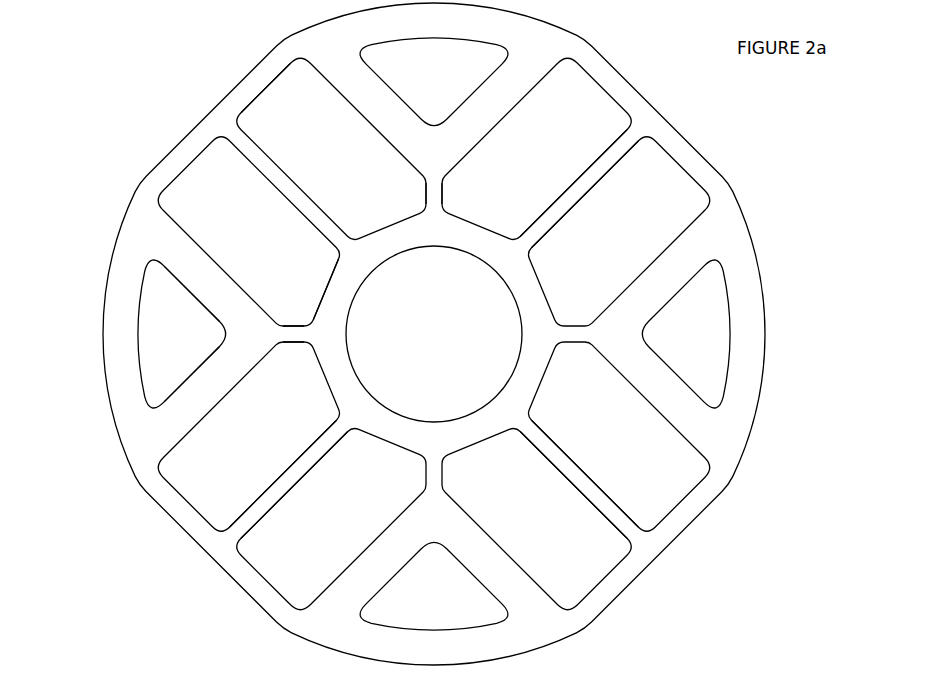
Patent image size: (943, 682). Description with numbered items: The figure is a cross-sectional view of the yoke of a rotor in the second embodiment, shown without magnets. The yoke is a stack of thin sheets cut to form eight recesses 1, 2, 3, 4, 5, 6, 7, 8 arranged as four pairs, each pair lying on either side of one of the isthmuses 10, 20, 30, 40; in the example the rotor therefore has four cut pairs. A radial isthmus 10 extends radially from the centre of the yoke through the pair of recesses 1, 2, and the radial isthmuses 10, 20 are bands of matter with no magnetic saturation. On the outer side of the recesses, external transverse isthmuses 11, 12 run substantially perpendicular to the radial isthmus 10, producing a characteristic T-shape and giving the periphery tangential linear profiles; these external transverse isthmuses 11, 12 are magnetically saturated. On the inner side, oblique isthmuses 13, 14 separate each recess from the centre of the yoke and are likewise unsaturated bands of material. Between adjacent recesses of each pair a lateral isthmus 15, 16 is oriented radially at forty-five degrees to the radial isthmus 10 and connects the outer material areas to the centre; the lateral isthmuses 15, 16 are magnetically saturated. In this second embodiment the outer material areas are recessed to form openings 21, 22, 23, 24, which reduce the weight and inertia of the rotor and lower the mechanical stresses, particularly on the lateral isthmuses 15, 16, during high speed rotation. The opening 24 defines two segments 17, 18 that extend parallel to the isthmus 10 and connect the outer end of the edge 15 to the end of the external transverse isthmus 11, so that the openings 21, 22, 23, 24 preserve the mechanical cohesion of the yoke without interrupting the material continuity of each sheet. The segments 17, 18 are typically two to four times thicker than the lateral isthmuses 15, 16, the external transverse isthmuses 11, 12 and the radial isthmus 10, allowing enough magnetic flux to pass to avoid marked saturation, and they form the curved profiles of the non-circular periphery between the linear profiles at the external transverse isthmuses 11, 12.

The recess 1 is at (251, 250).
The recess 2 is at (332, 167).
The recess 3 is at (516, 162).
The recess 4 is at (597, 248).
The recess 5 is at (597, 431).
The recess 6 is at (516, 523).
The recess 7 is at (332, 515).
The recess 8 is at (251, 432).
The radial isthmus 10 is at (292, 193).
The external transverse isthmus 11 is at (170, 168).
The external transverse isthmus 12 is at (238, 97).
The oblique isthmus 13 is at (335, 292).
The oblique isthmus 14 is at (395, 240).
The lateral isthmus 15 is at (297, 329).
The lateral isthmus 16 is at (440, 188).
The segment 17 is at (205, 286).
The segment 18 is at (212, 385).
The radial isthmus 20 is at (573, 192).
The opening 21 is at (433, 73).
The opening 22 is at (690, 345).
The opening 23 is at (430, 597).
The opening 24 is at (178, 333).
The isthmus 30 is at (598, 498).
The isthmus 40 is at (287, 478).